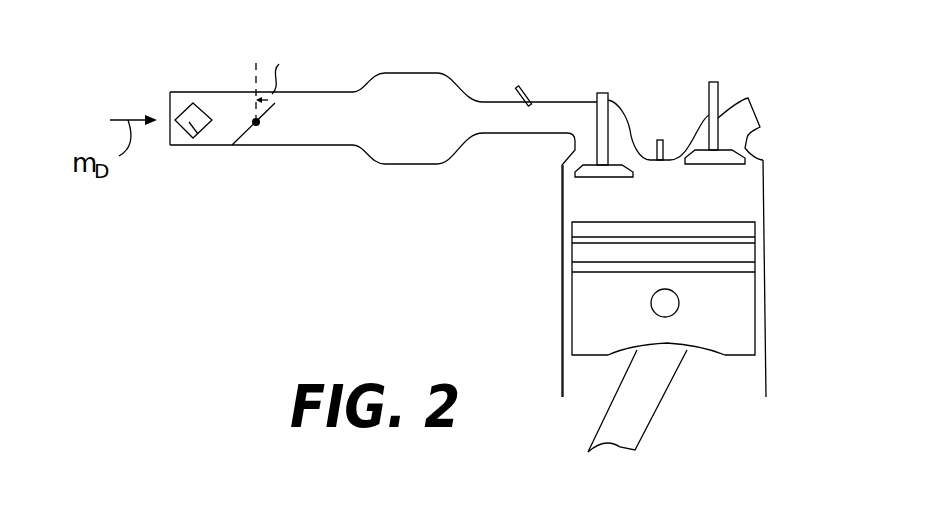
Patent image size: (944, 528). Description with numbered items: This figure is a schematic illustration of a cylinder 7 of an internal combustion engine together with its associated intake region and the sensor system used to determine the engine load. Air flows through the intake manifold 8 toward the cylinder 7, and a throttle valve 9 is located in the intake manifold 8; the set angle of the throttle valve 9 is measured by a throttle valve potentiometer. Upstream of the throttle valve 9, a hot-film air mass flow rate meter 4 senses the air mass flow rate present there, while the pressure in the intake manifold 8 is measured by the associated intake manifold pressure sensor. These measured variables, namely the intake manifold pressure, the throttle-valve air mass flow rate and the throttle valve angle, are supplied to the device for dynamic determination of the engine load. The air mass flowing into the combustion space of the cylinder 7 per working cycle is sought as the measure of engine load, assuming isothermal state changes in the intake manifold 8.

The hot-film air mass flow rate meter 4 is at (187, 130).
The cylinder 7 is at (562, 277).
The intake manifold 8 is at (356, 146).
The throttle valve 9 is at (246, 141).